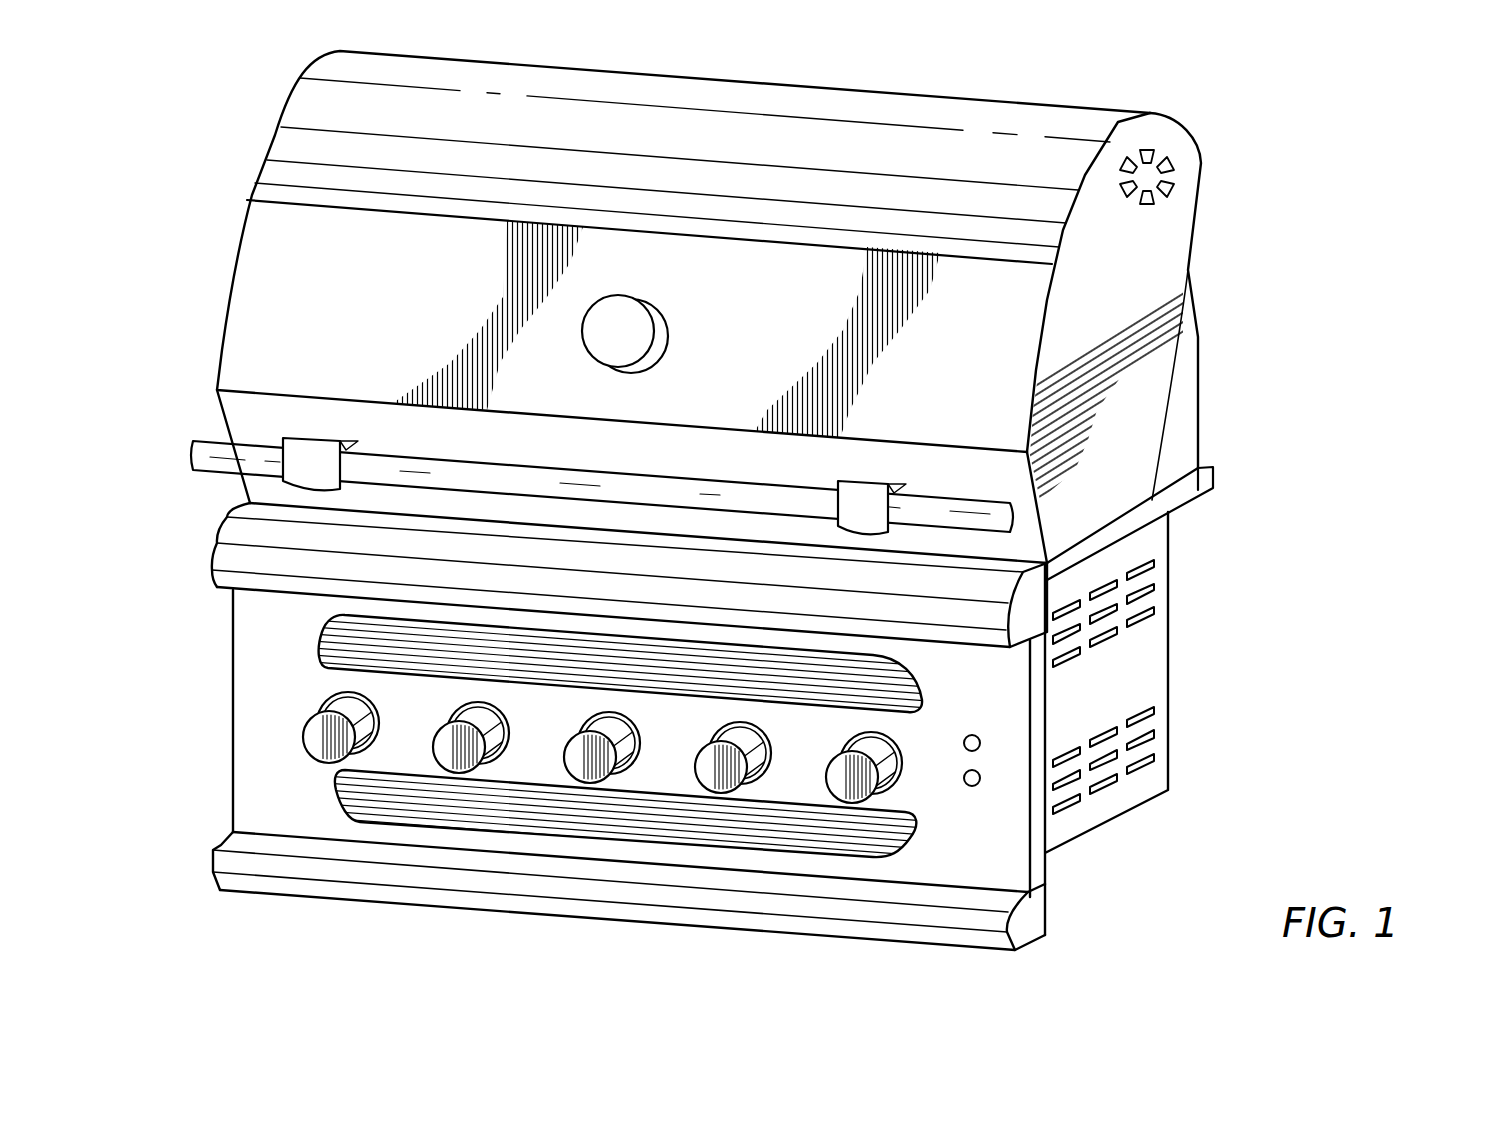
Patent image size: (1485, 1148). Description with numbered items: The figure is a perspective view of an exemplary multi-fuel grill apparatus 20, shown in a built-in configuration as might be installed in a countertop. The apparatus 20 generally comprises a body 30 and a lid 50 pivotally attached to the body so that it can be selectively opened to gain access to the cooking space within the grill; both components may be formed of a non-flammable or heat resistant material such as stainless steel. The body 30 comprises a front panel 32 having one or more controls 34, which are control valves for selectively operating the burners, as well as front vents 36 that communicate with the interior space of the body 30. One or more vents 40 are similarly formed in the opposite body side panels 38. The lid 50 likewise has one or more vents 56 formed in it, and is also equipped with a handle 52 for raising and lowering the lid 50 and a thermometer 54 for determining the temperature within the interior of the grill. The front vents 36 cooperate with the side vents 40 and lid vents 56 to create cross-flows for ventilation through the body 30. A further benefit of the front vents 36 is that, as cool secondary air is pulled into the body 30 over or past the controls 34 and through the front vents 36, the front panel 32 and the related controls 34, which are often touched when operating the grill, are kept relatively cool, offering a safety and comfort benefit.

The multi-fuel grill apparatus 20 is at (1352, 250).
The body 30 is at (1262, 620).
The front panel 32 is at (255, 782).
The controls 34 is at (318, 733).
The vents 36 is at (332, 641).
The body side panels 38 is at (1155, 670).
The vents 40 is at (1153, 620).
The lid 50 is at (1068, 79).
The handle 52 is at (193, 453).
The thermometer 54 is at (605, 328).
The vents 56 is at (1172, 165).